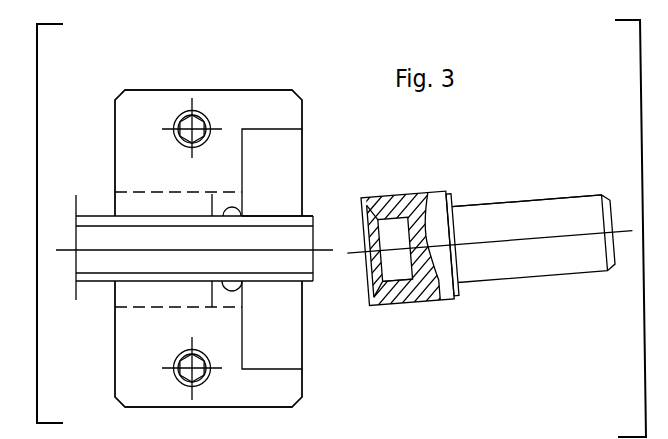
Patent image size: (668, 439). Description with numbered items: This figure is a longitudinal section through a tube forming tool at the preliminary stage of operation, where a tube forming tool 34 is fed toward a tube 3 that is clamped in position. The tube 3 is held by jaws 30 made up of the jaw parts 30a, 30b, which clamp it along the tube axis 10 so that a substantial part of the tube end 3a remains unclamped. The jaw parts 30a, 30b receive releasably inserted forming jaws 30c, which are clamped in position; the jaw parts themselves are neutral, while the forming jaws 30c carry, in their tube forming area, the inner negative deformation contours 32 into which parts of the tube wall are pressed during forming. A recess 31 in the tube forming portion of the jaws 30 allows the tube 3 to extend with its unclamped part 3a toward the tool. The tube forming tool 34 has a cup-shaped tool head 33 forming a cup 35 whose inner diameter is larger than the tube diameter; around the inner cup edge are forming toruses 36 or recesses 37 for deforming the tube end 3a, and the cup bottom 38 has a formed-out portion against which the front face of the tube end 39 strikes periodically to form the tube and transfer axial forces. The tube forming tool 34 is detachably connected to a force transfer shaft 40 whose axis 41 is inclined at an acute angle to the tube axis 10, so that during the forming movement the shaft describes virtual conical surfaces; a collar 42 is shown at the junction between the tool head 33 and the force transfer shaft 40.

The tube 3 is at (88, 218).
The tube end 3a is at (267, 218).
The tube axis 10 is at (100, 252).
The jaws 30 is at (140, 83).
The jaw part 30a is at (122, 125).
The jaw part 30b is at (130, 362).
The forming jaws 30c is at (168, 307).
The recess 31 is at (243, 170).
The inner negative deformation contours 32 is at (237, 215).
The tool head 33 is at (445, 293).
The tube forming tool 34 is at (497, 190).
The cup 35 is at (397, 225).
The forming toruses 36 is at (382, 305).
The recesses 37 is at (381, 216).
The cup bottom 38 is at (398, 293).
The tube end 39 is at (308, 285).
The force transfer shaft 40 is at (573, 253).
The axis of the force transfer shaft 41 is at (623, 228).
The collar 42 is at (460, 288).